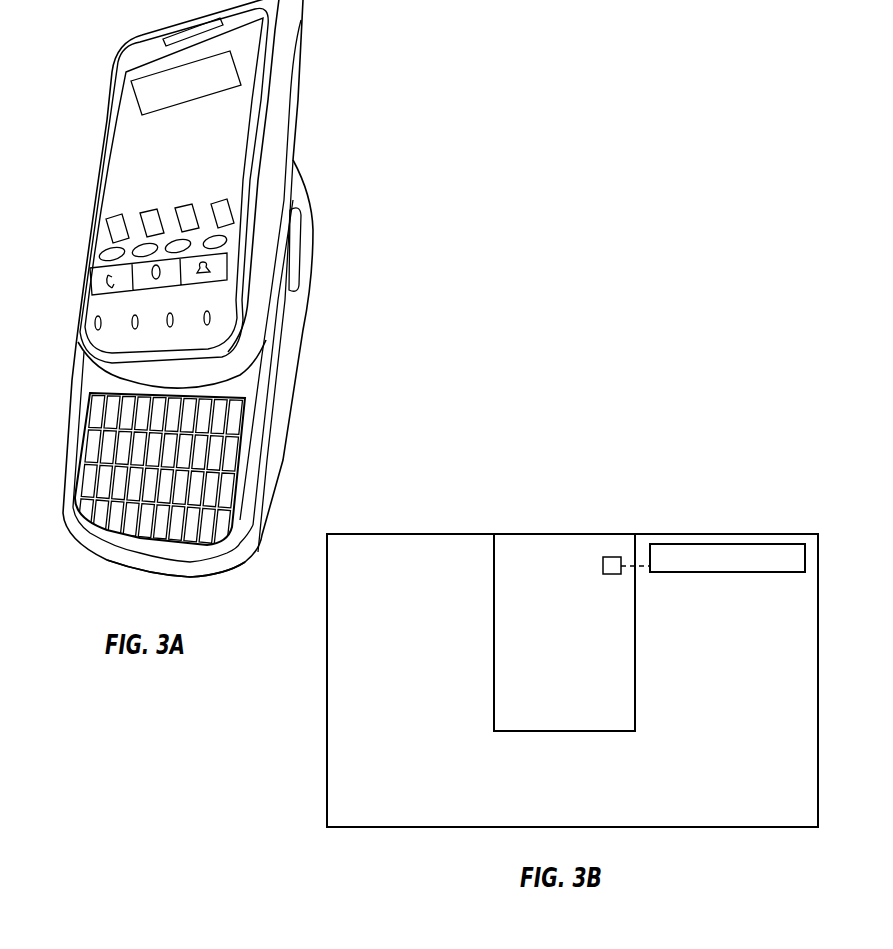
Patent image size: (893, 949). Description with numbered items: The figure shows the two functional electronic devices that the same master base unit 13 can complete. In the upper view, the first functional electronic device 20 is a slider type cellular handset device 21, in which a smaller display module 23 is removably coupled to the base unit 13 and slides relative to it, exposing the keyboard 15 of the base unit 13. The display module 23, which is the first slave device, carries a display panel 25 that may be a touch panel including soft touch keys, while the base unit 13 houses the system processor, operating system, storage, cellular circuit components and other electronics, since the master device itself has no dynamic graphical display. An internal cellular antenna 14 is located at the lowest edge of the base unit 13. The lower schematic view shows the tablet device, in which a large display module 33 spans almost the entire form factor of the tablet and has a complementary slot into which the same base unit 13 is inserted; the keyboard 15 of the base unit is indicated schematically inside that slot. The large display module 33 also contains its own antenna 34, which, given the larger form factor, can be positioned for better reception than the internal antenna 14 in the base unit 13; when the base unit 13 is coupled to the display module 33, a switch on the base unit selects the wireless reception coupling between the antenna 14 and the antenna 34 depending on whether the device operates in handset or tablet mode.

In FIG. 3A, the base unit 13 is at (287, 424).
In FIG. 3B, the base unit 13 is at (507, 641).
In FIG. 3A, the internal antenna 14 is at (190, 578).
In FIG. 3A, the keyboard 15 is at (117, 443).
In FIG. 3B, the keyboard 15 is at (613, 572).
In FIG. 3A, the first functional electronic device 20 is at (241, 305).
In FIG. 3A, the cellular handset device 21 is at (320, 296).
In FIG. 3A, the display module 23 is at (290, 95).
In FIG. 3A, the display panel 25 is at (132, 150).
In FIG. 3B, the large display module 33 is at (820, 588).
In FIG. 3B, the antenna 34 is at (722, 550).